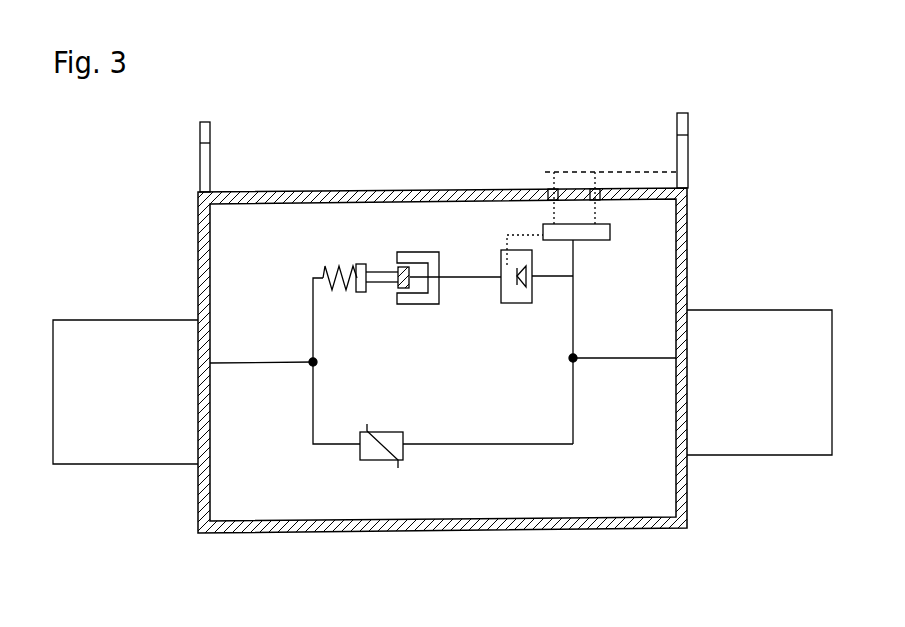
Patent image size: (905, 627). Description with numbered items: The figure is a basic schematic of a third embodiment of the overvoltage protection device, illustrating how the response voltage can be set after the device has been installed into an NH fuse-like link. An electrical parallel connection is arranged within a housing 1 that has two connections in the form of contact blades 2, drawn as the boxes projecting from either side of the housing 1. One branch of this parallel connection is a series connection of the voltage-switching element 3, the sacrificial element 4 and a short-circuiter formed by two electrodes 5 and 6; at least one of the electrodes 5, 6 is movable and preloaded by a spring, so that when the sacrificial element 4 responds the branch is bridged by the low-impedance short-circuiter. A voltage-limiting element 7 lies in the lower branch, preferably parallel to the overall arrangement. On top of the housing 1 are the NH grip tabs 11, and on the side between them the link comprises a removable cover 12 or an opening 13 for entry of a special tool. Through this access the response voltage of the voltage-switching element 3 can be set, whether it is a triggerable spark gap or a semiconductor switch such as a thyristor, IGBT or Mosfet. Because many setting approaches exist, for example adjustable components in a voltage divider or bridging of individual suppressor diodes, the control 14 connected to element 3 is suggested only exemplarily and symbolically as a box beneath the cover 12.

The housing 1 is at (498, 531).
The contact blades 2 is at (109, 453).
The voltage-switching element 3 is at (521, 285).
The sacrificial element 4 is at (382, 272).
The electrode 5 is at (362, 295).
The electrode 6 is at (407, 305).
The voltage-limiting element 7 is at (403, 464).
The NH grip tabs 11 is at (667, 125).
The removable cover 12 is at (545, 171).
The opening 13 is at (596, 183).
The control 14 is at (590, 229).